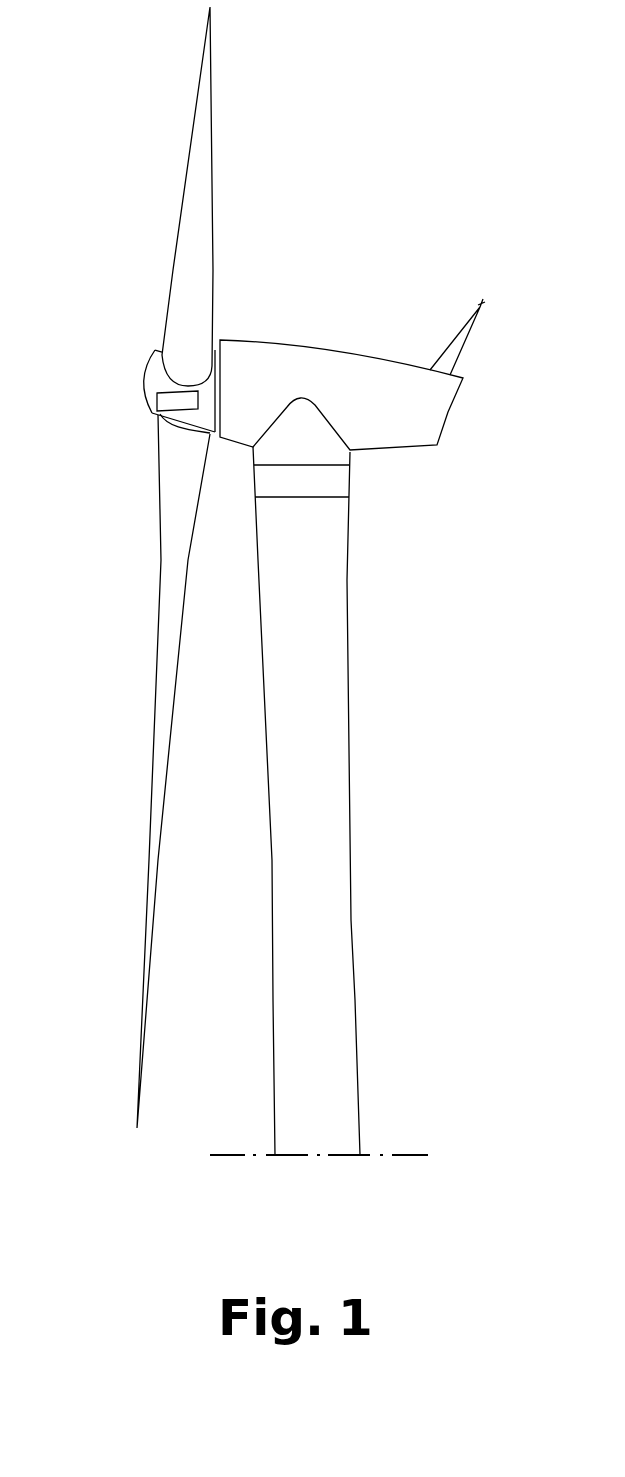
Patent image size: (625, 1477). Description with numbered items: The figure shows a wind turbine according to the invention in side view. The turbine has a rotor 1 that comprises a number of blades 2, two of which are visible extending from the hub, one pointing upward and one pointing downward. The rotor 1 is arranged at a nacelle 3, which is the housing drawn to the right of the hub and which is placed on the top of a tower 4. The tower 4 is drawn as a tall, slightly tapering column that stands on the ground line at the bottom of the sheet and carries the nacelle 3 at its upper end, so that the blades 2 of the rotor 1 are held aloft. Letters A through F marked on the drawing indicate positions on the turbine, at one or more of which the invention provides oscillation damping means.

The rotor 1 is at (112, 395).
The blades 2 is at (187, 242).
The nacelle 3 is at (320, 358).
The tower 4 is at (328, 657).